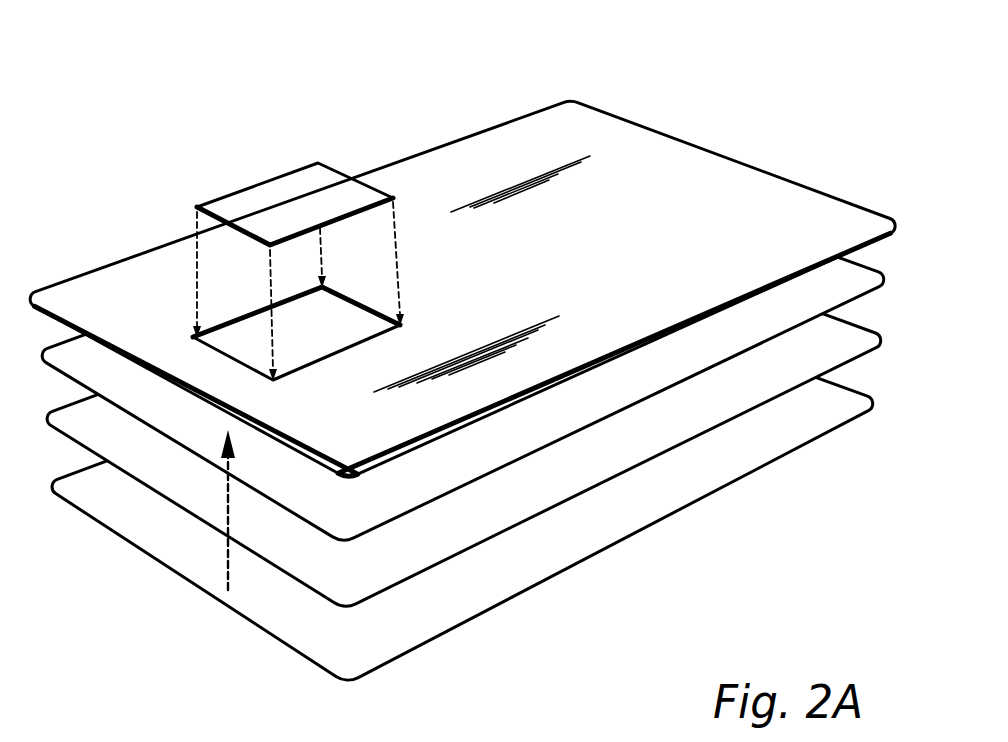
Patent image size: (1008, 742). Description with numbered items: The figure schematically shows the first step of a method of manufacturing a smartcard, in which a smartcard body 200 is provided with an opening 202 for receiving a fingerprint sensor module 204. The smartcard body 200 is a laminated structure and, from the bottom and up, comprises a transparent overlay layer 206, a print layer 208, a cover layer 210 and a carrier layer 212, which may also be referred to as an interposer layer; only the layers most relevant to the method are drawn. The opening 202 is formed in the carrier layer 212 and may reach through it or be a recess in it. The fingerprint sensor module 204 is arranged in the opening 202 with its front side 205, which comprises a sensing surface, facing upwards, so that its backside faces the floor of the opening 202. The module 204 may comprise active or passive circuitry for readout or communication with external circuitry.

The smartcard body 200 is at (462, 343).
The opening 202 is at (252, 352).
The fingerprint sensor module 204 is at (213, 199).
The front side 205 is at (277, 193).
The transparent overlay layer 206 is at (453, 605).
The print layer 208 is at (521, 505).
The cover layer 210 is at (607, 405).
The carrier layer 212 is at (652, 182).